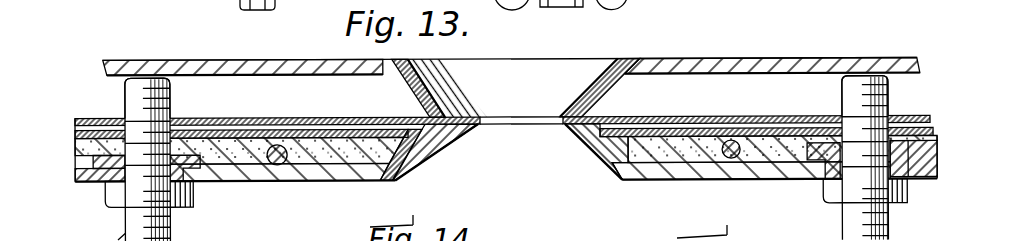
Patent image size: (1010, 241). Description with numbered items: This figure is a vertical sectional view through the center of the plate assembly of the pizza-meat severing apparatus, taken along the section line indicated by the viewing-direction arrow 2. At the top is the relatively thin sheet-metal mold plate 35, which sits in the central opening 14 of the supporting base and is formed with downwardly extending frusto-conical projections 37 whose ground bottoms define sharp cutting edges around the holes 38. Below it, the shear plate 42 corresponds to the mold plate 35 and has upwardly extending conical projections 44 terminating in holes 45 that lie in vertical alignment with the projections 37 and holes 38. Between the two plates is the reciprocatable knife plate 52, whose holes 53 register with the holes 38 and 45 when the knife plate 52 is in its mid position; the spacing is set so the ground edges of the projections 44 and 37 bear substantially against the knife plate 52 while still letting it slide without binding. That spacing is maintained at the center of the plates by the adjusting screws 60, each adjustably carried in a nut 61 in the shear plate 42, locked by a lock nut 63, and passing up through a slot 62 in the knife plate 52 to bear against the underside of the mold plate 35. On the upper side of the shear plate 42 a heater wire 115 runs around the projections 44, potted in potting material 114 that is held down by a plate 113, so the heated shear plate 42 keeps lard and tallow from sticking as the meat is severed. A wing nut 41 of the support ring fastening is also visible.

The central opening 14 is at (110, 108).
The viewing direction arrow 2 is at (227, 36).
The mold plate 35 is at (703, 59).
The frusto-conical projections 37 is at (595, 92).
The holes 38 is at (563, 115).
The wing nuts 41 is at (630, 0).
The shear plate 42 is at (316, 182).
The conical projections 44 is at (603, 153).
The holes 45 is at (552, 126).
The knife plate 52 is at (293, 117).
The holes 53 is at (472, 130).
The adjusting screws 60 is at (847, 233).
The nuts 61 is at (200, 182).
The slots 62 is at (172, 105).
The lock nuts 63 is at (115, 196).
The plate 113 is at (352, 133).
The potting material 114 is at (308, 155).
The heater wire 115 is at (272, 163).